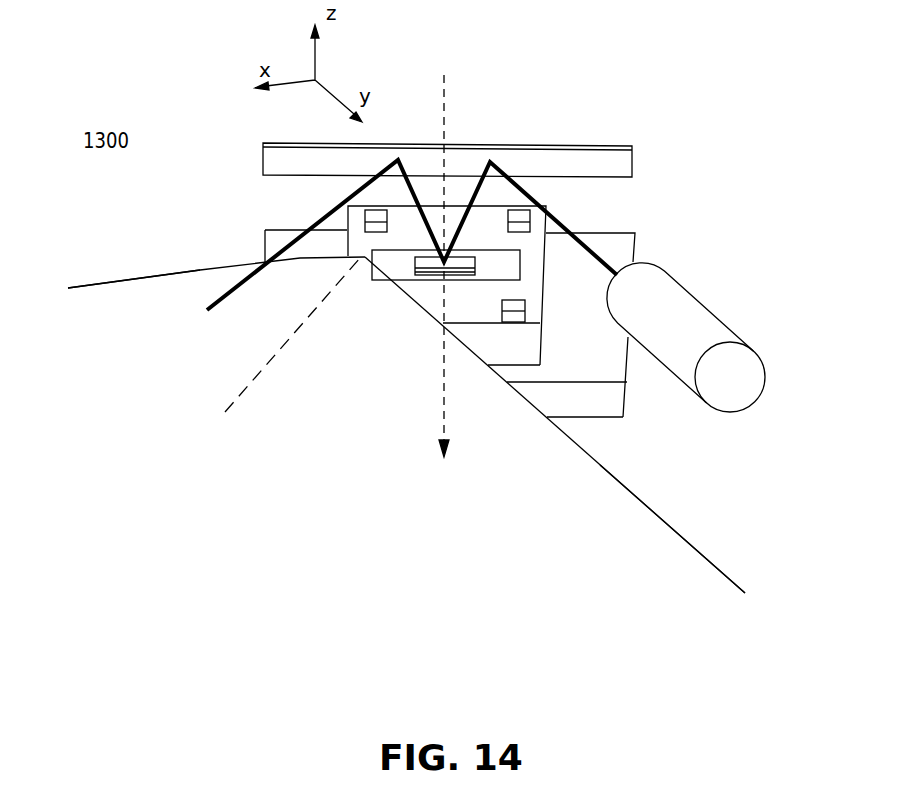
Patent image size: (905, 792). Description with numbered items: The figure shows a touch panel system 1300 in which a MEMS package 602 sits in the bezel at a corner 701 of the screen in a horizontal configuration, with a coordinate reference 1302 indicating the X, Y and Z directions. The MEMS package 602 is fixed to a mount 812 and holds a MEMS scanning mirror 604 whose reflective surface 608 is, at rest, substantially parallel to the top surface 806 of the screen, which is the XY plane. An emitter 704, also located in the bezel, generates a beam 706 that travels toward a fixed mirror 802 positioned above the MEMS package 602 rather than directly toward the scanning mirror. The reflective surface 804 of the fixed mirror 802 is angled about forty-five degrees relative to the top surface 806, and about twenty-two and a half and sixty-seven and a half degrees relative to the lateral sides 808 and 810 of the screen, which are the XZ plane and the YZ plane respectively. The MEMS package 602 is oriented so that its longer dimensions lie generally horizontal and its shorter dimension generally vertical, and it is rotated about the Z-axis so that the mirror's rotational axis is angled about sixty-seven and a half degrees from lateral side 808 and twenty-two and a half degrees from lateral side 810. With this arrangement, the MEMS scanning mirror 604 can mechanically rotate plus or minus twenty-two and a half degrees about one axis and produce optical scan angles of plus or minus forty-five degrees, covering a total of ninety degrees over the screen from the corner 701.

The touch panel system 1300 is at (105, 153).
The direction of movement 1302 is at (228, 412).
The reflective surface 608 is at (446, 105).
The fixed mirror 802 is at (602, 143).
The reflective surface 804 is at (621, 165).
The MEMS scanning mirror 604 is at (475, 265).
The corner 701 is at (360, 257).
The mount 812 is at (617, 255).
The MEMS package 602 is at (530, 291).
The emitter 704 is at (717, 332).
The beam 706 is at (240, 285).
The top surface 806 is at (547, 546).
The lateral side 808 is at (133, 278).
The lateral side 810 is at (687, 540).